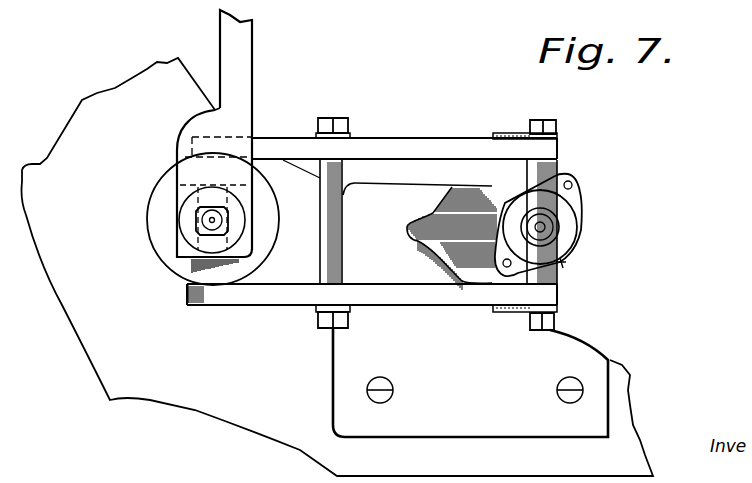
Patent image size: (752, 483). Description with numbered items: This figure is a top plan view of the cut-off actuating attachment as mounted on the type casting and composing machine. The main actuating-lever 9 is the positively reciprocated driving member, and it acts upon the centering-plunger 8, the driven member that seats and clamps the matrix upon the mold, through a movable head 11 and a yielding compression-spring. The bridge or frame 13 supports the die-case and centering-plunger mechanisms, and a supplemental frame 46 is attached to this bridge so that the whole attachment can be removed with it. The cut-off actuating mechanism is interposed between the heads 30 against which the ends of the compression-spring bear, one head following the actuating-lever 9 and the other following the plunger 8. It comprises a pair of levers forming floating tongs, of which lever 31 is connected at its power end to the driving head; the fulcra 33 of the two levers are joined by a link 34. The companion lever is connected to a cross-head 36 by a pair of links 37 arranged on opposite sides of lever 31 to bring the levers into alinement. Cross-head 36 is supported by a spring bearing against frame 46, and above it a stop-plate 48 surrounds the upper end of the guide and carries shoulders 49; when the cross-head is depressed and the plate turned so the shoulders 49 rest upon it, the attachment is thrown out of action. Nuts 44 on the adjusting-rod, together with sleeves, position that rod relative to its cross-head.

The centering-plunger 8 is at (205, 222).
The main actuating-lever 9 is at (224, 141).
The movable head 11 is at (190, 260).
The bridge or frame 13 is at (441, 382).
The heads 30 is at (273, 254).
The lever 31 is at (412, 270).
The fulcra 33 is at (343, 127).
The link 34 is at (318, 136).
The cross-head 36 is at (561, 267).
The links 37 is at (557, 137).
The nuts 44 is at (558, 227).
The supplemental frame 46 is at (420, 236).
The stop-plate 48 is at (577, 195).
The shoulders or projections 49 is at (573, 182).